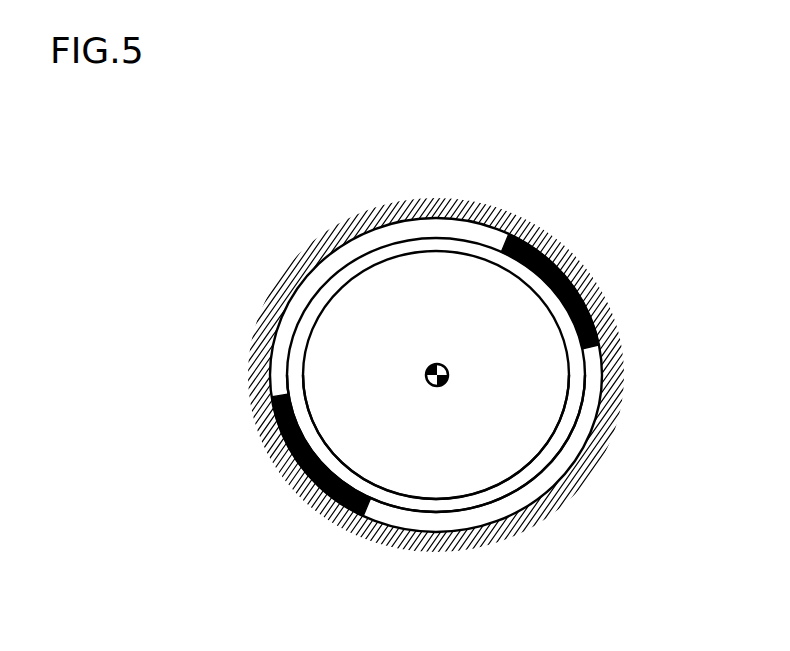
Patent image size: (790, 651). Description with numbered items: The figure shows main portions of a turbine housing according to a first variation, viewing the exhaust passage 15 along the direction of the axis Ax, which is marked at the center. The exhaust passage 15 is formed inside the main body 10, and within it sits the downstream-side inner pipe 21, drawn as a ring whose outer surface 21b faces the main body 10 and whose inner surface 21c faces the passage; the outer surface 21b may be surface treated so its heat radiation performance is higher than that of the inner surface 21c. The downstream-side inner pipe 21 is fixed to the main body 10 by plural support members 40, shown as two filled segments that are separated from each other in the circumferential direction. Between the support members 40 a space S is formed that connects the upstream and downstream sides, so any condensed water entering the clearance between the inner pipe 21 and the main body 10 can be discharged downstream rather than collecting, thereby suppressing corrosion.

The space S is at (343, 253).
The main body 10 is at (277, 331).
The exhaust passage 15 is at (428, 307).
The support member 40 is at (547, 234).
The axis Ax is at (443, 365).
The downstream-side inner pipe 21 is at (520, 478).
The outer surface 21b is at (433, 512).
The inner surface 21c is at (412, 497).